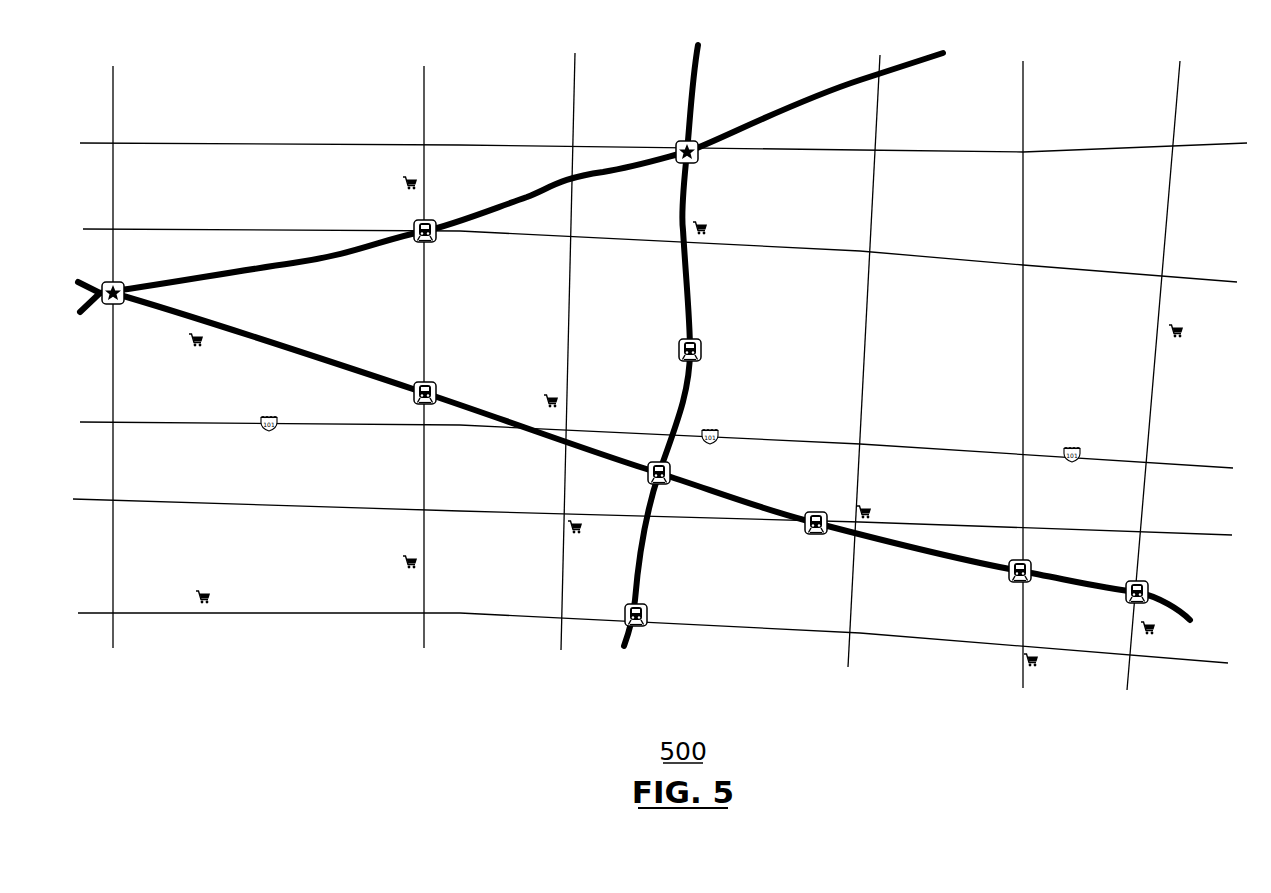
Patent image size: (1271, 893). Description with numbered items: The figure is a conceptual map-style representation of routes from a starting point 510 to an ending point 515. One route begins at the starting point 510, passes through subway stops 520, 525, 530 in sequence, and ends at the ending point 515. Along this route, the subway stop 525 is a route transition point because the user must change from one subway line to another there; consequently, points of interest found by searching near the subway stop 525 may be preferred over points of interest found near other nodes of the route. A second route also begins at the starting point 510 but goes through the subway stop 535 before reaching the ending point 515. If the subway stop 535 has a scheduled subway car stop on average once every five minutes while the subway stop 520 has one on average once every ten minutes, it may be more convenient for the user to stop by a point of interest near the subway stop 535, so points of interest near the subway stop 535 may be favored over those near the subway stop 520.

The starting point 510 is at (124, 284).
The ending point 515 is at (697, 162).
The subway stop 520 is at (435, 383).
The subway stop 525 is at (648, 479).
The subway stop 530 is at (680, 340).
The subway stop 535 is at (434, 242).